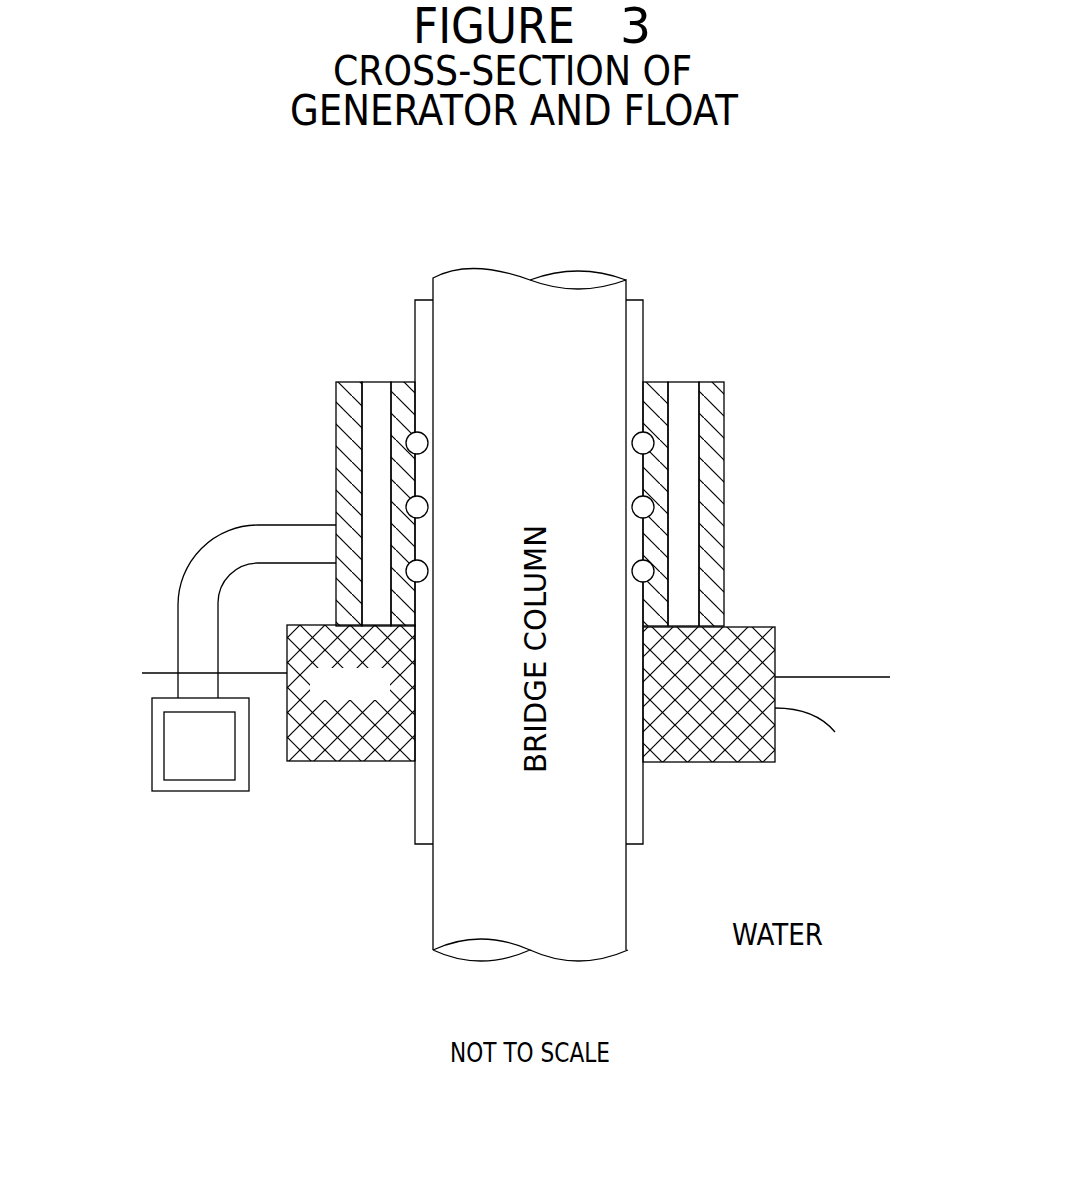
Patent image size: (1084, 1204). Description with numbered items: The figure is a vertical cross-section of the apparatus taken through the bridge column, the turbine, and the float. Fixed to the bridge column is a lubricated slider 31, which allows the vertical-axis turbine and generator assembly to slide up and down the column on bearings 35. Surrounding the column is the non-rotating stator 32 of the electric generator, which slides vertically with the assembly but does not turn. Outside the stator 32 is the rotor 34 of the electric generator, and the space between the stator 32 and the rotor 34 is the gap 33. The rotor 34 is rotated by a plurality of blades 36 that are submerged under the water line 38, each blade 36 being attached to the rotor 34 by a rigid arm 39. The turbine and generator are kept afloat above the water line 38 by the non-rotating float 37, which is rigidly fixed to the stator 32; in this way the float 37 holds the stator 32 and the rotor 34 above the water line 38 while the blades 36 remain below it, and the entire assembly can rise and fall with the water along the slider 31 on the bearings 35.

The lubricated slider 31 is at (646, 329).
The stator 32 is at (653, 379).
The gap 33 is at (685, 427).
The rotor 34 is at (726, 497).
The bearings 35 is at (654, 572).
The blade 36 is at (200, 794).
The float 37 is at (365, 763).
The water line 38 is at (161, 671).
The rigid arm 39 is at (214, 545).